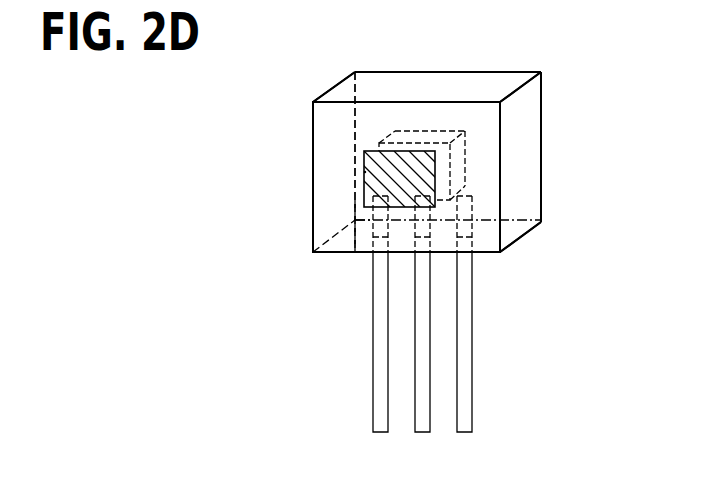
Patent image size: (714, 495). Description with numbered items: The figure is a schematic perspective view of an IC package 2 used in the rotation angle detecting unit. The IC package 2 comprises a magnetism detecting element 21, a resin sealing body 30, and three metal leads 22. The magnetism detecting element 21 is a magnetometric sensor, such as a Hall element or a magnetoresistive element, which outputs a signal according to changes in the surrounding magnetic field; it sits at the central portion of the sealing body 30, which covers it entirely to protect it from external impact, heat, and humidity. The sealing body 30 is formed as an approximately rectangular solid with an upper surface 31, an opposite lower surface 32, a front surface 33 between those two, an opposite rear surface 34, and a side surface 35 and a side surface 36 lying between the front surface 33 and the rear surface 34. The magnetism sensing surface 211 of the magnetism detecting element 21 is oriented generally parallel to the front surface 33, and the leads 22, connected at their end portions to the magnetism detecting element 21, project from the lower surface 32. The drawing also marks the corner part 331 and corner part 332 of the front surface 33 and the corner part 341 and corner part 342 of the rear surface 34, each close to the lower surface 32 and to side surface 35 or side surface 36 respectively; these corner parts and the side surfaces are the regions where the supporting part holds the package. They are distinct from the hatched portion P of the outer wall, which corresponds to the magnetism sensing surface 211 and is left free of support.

The IC package 2 is at (433, 229).
The magnetism detecting element 21 is at (453, 188).
The magnetism sensing surface 211 is at (437, 168).
The leads 22 is at (379, 403).
The sealing body 30 is at (525, 110).
The upper surface 31 is at (450, 87).
The lower surface 32 is at (355, 252).
The front surface 33 is at (332, 107).
The corner part 331 is at (313, 252).
The corner part 332 is at (503, 254).
The rear surface 34 is at (492, 100).
The corner part 341 is at (353, 208).
The corner part 342 is at (538, 213).
The side surface 35 is at (332, 174).
The side surface 36 is at (517, 138).
The portion P is at (365, 172).